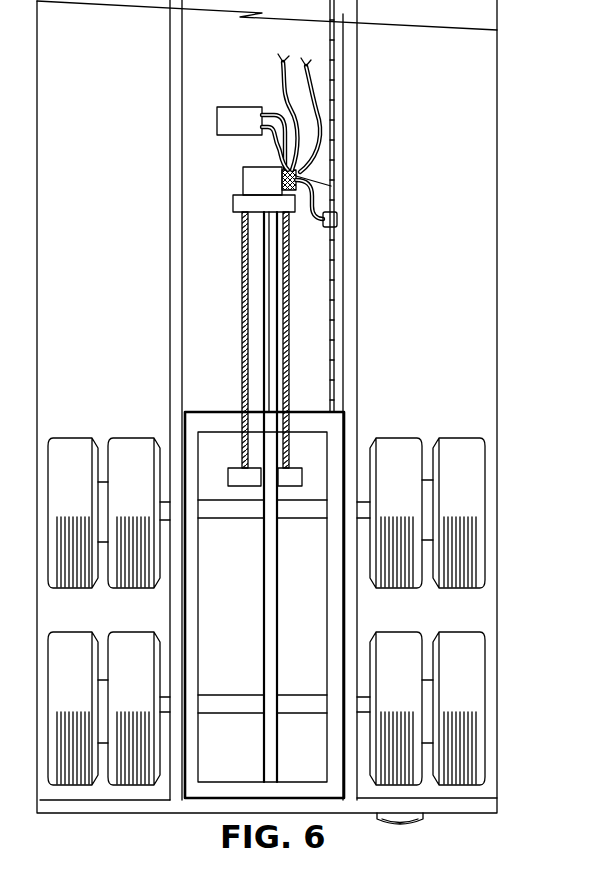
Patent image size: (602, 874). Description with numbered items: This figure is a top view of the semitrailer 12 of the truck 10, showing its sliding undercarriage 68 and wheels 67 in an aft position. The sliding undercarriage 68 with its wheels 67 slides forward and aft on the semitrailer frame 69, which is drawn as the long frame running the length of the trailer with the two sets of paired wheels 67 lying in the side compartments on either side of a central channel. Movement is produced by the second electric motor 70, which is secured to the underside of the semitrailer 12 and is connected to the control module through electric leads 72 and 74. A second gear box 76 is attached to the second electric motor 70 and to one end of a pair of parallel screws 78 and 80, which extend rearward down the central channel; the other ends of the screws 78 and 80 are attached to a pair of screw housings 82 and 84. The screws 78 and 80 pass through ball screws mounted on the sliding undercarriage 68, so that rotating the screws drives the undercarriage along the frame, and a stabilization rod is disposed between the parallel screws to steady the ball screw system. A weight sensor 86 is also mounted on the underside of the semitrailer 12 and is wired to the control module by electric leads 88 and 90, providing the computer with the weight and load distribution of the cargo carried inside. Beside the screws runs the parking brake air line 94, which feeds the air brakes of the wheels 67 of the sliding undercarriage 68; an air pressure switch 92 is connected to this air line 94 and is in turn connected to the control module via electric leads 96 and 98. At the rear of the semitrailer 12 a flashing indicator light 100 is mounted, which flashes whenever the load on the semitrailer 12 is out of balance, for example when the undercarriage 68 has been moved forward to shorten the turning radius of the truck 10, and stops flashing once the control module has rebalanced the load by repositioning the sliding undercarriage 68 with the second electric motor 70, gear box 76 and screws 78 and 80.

The truck 10 is at (511, 94).
The semitrailer 12 is at (468, 200).
The wheels 67 is at (140, 440).
The sliding undercarriage 68 is at (227, 788).
The semitrailer frame 69 is at (172, 345).
The second electric motor 70 is at (243, 176).
The electric lead 72 is at (279, 63).
The electric lead 74 is at (304, 82).
The second gear box 76 is at (233, 203).
The parallel screw 78 is at (289, 385).
The parallel screw 80 is at (243, 357).
The screw housing 82 is at (290, 484).
The screw housing 84 is at (247, 484).
The weight sensor 86 is at (216, 115).
The electric lead 88 is at (280, 112).
The electric lead 90 is at (290, 118).
The air pressure switch 92 is at (337, 219).
The parking brake air line 94 is at (334, 160).
The electric lead 96 is at (298, 184).
The electric lead 98 is at (314, 195).
The flashing indicator light 100 is at (420, 820).